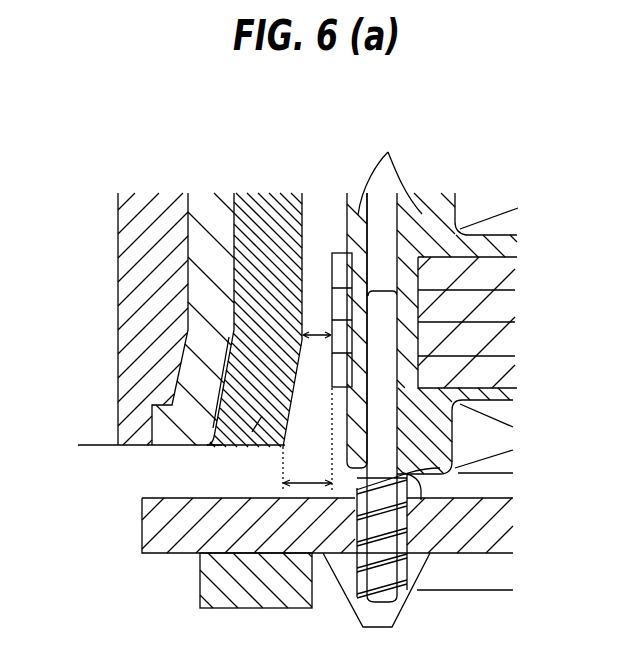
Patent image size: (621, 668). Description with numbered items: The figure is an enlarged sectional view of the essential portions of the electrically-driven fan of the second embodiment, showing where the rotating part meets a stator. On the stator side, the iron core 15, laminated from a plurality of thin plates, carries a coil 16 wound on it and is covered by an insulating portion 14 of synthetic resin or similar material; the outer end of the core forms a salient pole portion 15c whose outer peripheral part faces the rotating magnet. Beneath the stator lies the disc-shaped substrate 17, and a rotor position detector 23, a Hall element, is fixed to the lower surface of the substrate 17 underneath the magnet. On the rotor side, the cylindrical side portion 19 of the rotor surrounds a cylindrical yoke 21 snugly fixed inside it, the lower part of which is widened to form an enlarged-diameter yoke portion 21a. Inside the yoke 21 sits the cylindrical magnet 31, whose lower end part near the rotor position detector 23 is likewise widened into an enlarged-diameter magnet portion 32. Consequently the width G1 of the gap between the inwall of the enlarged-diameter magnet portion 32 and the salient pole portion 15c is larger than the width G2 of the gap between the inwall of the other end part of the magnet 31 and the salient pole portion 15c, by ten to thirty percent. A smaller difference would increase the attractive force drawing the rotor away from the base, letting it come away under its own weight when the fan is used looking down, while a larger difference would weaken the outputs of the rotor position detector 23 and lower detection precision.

The insulating portion 14 is at (381, 374).
The iron core 15 is at (478, 282).
The salient pole portion 15c is at (333, 298).
The coil 16 is at (473, 445).
The disc-shaped substrate 17 is at (158, 530).
The cylindrical side portion 19 is at (150, 315).
The cylindrical yoke 21 is at (207, 265).
The enlarged-diameter yoke portion 21a is at (219, 446).
The rotor position detector 23 is at (218, 587).
The cylindrical magnet 31 is at (233, 243).
The enlarged-diameter magnet portion 32 is at (257, 420).
The gap width G1 is at (307, 439).
The gap width G2 is at (316, 337).